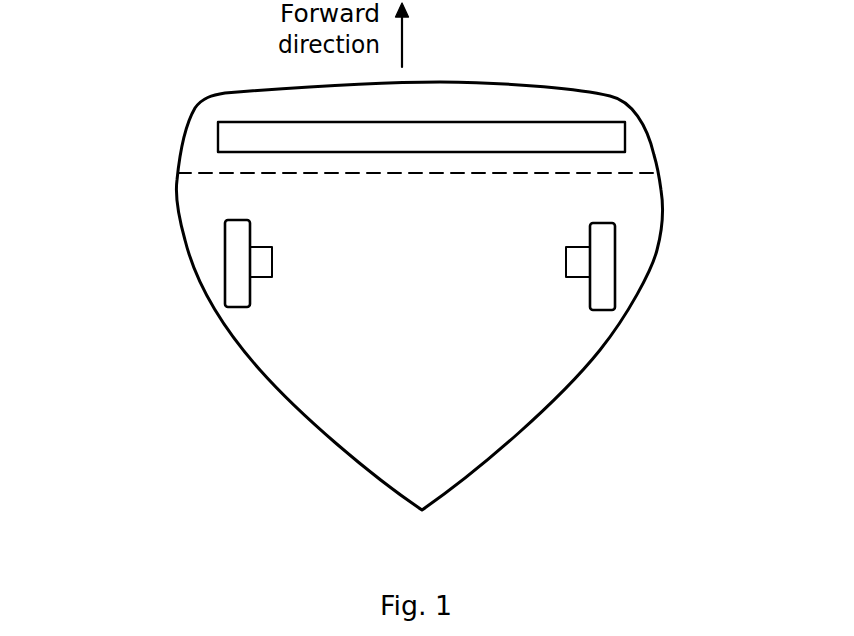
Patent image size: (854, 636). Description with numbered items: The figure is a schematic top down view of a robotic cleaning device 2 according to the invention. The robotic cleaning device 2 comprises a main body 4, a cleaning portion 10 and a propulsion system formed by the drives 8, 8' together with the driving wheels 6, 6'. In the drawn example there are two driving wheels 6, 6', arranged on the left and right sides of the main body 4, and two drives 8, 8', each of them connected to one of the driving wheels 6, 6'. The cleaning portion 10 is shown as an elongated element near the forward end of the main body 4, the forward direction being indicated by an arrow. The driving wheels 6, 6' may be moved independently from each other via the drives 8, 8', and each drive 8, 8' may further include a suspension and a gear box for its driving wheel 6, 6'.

The robotic cleaning device 2 is at (187, 58).
The main body 4 is at (470, 383).
The driving wheel 6 is at (146, 263).
The driving wheel 6' is at (646, 266).
The drive 8 is at (174, 243).
The drive 8' is at (659, 217).
The cleaning portion 10 is at (538, 120).